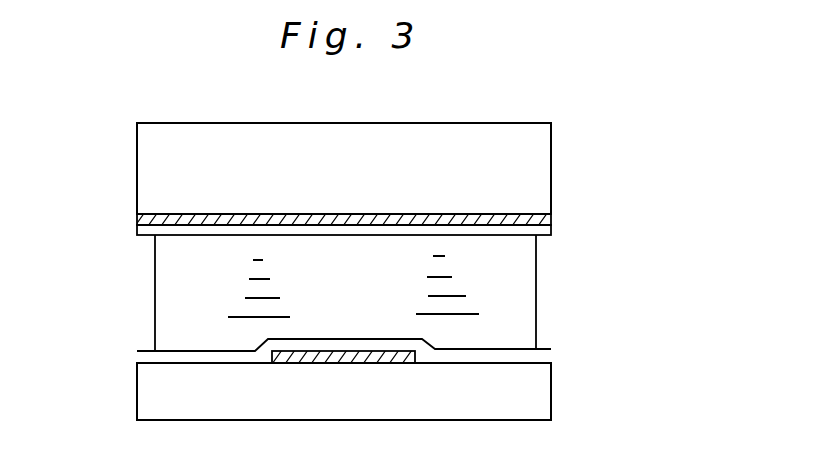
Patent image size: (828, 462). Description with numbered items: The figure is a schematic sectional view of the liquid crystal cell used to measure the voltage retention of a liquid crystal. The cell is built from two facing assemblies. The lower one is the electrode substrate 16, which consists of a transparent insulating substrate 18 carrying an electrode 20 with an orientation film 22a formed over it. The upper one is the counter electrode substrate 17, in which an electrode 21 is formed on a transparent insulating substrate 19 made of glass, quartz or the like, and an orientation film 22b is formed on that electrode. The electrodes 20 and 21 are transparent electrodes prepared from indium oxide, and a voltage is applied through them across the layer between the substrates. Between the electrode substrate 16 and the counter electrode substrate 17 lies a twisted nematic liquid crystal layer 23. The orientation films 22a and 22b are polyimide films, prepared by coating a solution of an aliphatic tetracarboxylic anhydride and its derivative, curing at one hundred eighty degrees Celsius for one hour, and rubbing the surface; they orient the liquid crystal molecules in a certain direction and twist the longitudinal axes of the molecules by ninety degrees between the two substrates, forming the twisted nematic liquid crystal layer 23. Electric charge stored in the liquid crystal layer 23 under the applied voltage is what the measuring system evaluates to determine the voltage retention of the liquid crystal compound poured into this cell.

The electrode substrate 16 is at (637, 350).
The counter electrode substrate 17 is at (632, 128).
The transparent insulating substrate 18 is at (540, 398).
The transparent insulating substrate 19 is at (541, 153).
The electrode 20 is at (285, 364).
The electrode 21 is at (547, 217).
The orientation film 22a is at (543, 352).
The orientation film 22b is at (552, 231).
The twisted nematic liquid crystal layer 23 is at (528, 305).